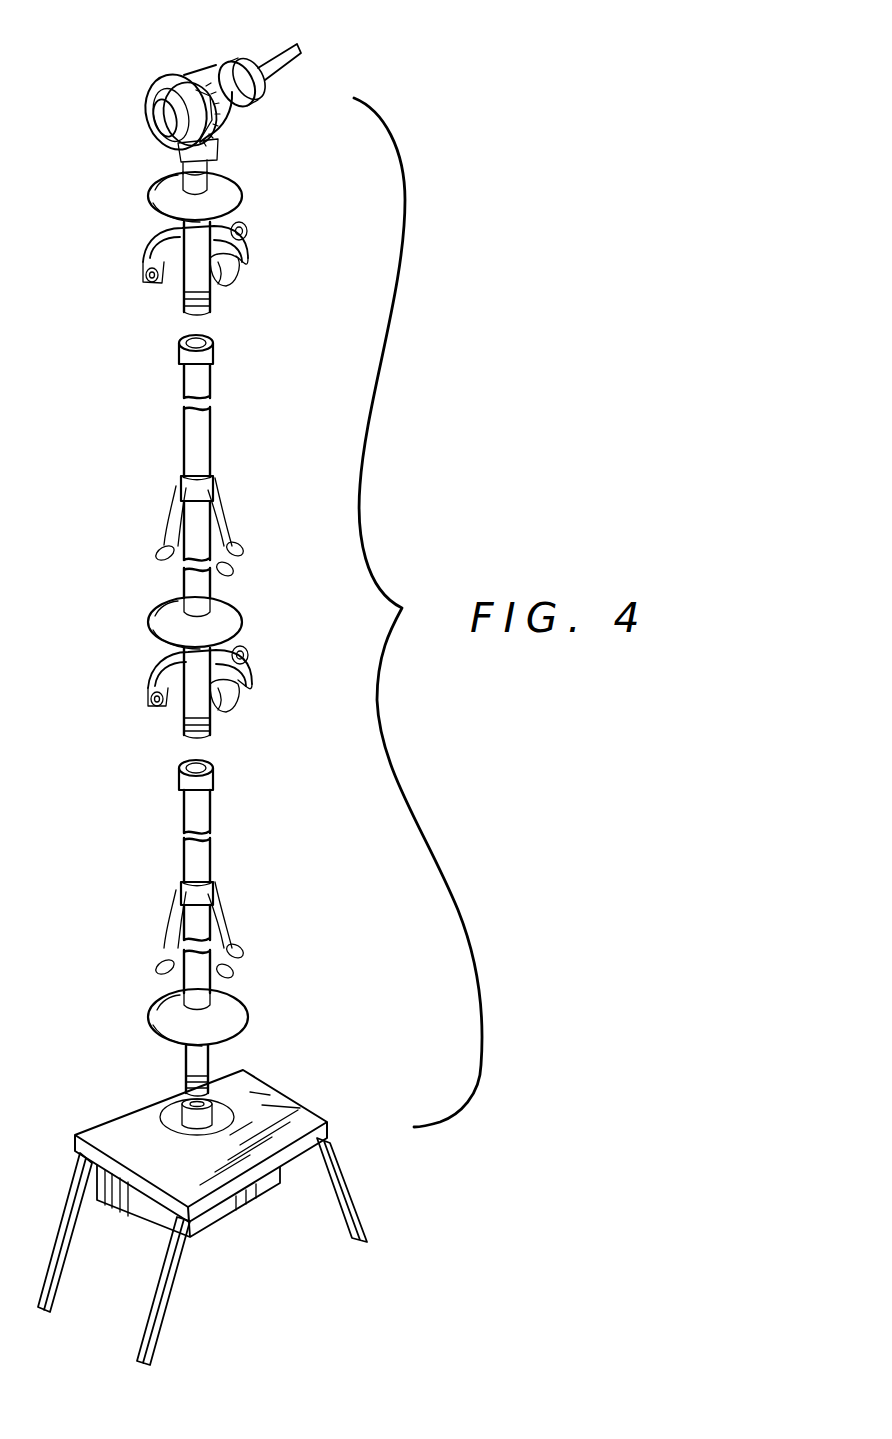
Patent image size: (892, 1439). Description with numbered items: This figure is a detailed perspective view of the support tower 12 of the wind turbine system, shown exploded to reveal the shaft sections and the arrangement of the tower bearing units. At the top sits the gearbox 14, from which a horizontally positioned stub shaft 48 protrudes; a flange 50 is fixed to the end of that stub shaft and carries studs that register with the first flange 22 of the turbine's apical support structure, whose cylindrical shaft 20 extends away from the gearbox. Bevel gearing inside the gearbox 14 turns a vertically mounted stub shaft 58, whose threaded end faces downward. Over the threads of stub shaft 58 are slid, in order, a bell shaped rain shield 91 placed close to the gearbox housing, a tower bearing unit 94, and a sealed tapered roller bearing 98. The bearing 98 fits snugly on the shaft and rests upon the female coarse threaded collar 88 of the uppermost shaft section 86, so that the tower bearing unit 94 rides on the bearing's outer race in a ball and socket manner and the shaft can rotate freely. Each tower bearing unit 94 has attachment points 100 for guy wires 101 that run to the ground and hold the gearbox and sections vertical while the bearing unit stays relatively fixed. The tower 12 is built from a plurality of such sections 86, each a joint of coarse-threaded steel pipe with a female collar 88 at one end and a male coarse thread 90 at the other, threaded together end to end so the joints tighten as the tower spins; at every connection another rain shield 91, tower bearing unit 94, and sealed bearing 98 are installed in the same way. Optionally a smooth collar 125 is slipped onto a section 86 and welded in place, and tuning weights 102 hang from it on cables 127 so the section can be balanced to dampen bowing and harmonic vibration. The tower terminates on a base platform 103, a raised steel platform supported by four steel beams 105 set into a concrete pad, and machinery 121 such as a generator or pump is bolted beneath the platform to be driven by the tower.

The tower 12 is at (160, 438).
The gearbox 14 is at (140, 58).
The cylindrical shaft 20 is at (270, 62).
The first flange 22 is at (264, 90).
The stub shaft 48 is at (218, 72).
The flange 50 is at (253, 100).
The stub shaft 58 is at (180, 160).
The shaft section 86 is at (214, 448).
The female coarse threaded collar 88 is at (212, 360).
The male coarse thread 90 is at (212, 732).
The bell shaped rain shield 91 is at (150, 197).
The tower bearing unit 94 is at (142, 258).
The sealed tapered roller bearing 98 is at (216, 282).
The attachment points 100 is at (248, 226).
The guy wires 101 is at (246, 234).
The tuning weights 102 is at (158, 560).
The base platform 103 is at (300, 1104).
The steel beams 105 is at (346, 1188).
The machinery 121 is at (242, 1212).
The smooth collar 125 is at (182, 886).
The cables 127 is at (222, 510).